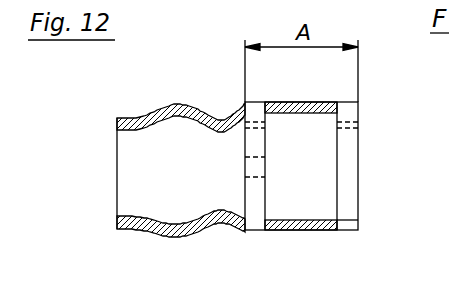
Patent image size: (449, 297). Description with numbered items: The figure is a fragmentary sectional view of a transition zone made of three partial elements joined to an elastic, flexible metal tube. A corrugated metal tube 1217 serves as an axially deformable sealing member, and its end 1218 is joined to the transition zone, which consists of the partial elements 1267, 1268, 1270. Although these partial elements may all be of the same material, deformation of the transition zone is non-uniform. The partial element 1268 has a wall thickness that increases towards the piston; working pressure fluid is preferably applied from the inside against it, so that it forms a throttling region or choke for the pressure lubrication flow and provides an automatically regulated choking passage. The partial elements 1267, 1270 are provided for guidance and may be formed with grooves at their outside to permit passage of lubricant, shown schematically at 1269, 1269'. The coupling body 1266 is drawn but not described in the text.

The corrugated metal tube 1217 is at (136, 118).
The end of corrugated metal tube 1218 is at (218, 121).
The coupling sleeve 1266 is at (355, 178).
The partial element 1267 is at (257, 223).
The partial element 1268 is at (302, 222).
The groove 1269 is at (301, 126).
The groove 1269' is at (388, 163).
The partial element 1270 is at (345, 223).